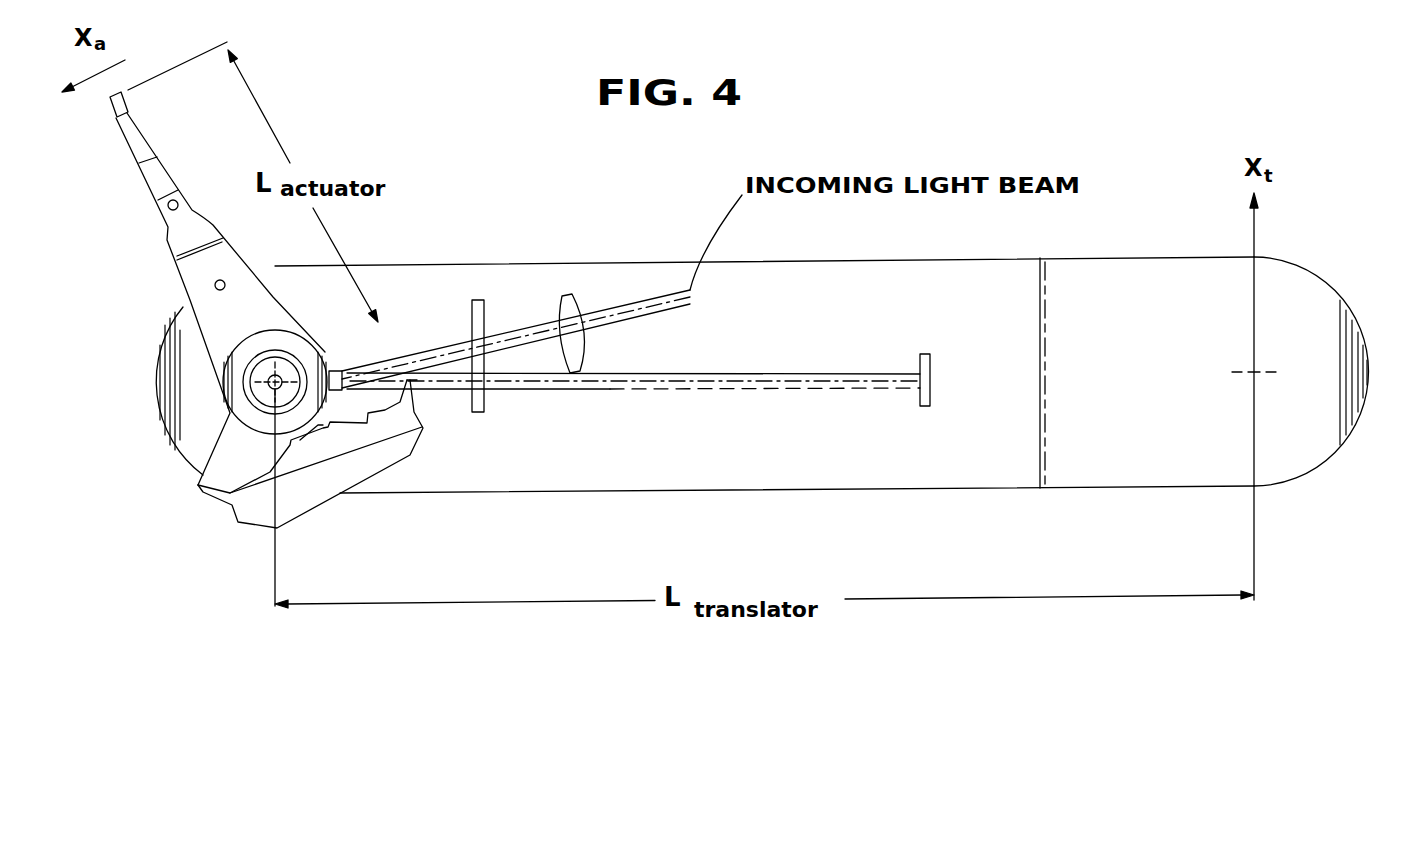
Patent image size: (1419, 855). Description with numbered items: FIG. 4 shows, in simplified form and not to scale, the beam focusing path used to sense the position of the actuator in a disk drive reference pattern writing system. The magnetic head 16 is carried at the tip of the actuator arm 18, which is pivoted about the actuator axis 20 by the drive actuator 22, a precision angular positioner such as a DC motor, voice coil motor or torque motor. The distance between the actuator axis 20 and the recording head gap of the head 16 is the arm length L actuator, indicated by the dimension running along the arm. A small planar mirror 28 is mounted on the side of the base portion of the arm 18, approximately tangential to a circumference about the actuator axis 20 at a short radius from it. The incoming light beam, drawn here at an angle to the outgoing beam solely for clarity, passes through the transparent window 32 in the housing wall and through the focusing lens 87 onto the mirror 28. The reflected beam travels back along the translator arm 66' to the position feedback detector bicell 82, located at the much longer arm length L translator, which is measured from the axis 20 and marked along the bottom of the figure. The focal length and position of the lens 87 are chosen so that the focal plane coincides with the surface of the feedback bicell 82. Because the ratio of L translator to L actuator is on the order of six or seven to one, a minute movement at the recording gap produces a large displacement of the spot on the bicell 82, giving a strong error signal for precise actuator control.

The magnetic head 16 is at (107, 115).
The actuator arm 18 is at (178, 270).
The actuator axis 20 is at (290, 370).
The drive actuator 22 is at (250, 527).
The planar mirror 28 is at (343, 366).
The transparent window 32 is at (468, 306).
The focusing lens 87 is at (563, 295).
The position feedback detector bicell 82 is at (925, 407).
The translator arm 66' is at (762, 401).